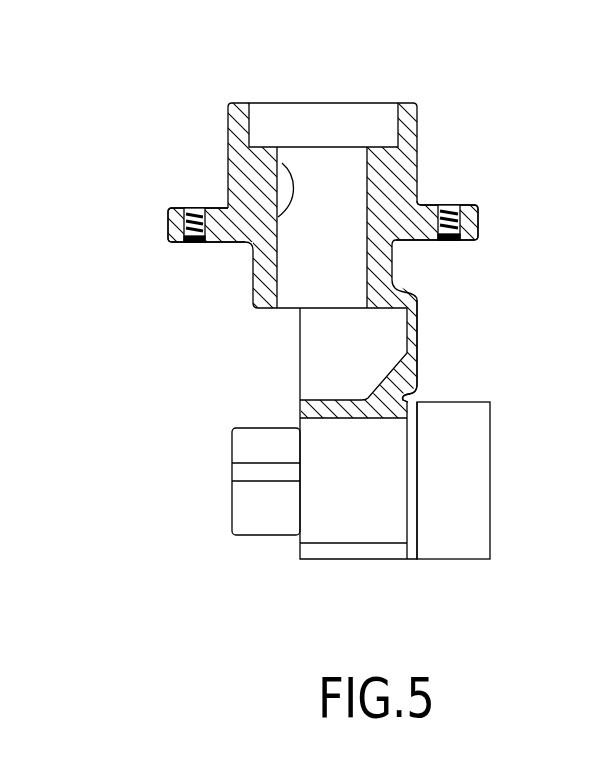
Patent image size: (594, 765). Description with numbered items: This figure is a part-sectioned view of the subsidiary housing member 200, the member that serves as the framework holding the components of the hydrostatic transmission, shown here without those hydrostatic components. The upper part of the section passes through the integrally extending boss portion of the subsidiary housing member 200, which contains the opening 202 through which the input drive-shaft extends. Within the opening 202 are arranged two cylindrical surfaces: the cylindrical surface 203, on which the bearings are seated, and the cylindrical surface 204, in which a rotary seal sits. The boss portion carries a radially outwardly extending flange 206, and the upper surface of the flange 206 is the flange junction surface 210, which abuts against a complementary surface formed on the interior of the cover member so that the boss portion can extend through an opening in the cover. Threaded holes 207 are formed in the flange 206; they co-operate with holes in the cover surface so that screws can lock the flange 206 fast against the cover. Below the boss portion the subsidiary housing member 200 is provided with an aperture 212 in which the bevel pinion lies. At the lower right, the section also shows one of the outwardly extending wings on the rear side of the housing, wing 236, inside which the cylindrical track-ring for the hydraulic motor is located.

The subsidiary housing member 200 is at (413, 363).
The opening 202 is at (360, 272).
The cylindrical surface 203 is at (268, 160).
The cylindrical surface 204 is at (400, 124).
The flange 206 is at (167, 222).
The threaded holes 207 is at (193, 210).
The flange junction surface 210 is at (468, 203).
The aperture 212 is at (380, 365).
The wing 236 is at (483, 497).